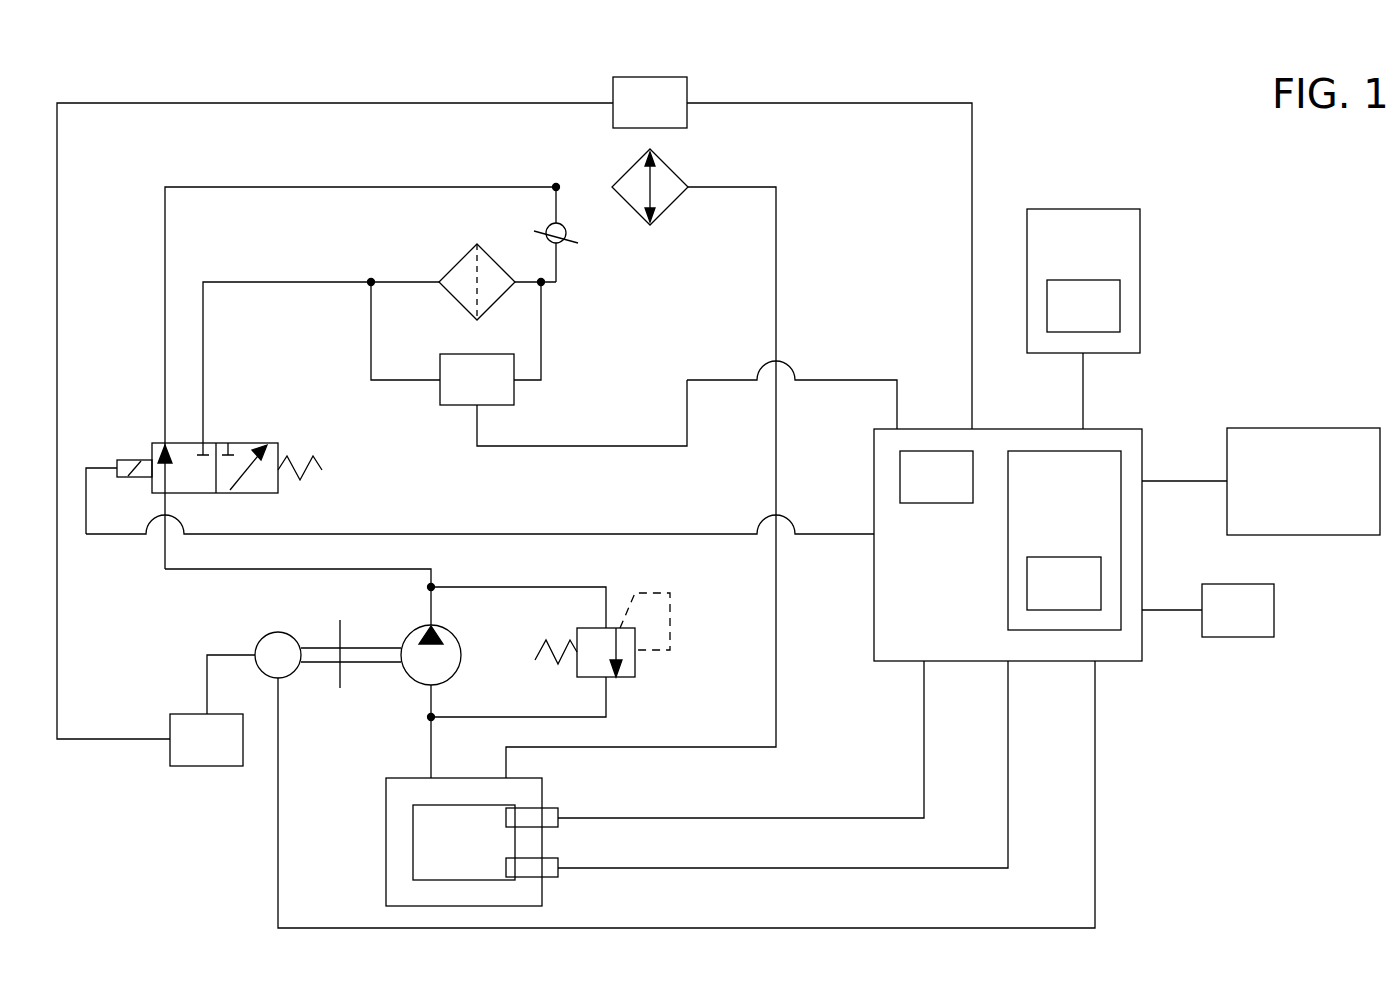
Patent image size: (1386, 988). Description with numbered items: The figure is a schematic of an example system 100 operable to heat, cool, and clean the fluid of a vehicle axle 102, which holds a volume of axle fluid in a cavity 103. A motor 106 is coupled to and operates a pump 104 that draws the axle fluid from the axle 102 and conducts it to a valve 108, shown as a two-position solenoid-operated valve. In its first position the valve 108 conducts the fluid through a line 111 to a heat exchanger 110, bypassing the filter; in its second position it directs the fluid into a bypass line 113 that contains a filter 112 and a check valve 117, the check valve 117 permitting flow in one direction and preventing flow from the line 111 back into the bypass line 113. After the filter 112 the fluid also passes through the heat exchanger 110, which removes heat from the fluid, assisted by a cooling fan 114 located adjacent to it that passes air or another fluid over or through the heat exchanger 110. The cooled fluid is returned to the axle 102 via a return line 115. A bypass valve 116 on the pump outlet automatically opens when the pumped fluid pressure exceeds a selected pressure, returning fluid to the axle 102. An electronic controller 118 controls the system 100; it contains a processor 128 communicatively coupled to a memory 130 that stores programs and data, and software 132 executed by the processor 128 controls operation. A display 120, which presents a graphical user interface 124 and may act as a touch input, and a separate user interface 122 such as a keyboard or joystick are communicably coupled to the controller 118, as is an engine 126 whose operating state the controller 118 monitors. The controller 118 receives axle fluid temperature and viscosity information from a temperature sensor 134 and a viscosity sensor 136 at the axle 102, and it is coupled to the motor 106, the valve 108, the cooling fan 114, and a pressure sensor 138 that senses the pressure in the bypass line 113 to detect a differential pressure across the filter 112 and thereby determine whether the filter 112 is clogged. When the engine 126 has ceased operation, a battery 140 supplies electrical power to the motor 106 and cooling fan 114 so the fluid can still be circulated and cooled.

The system 100 is at (971, 53).
The vehicle axle 102 is at (387, 820).
The cavity 103 is at (443, 855).
The pump 104 is at (458, 632).
The motor 106 is at (262, 638).
The valve 108 is at (152, 448).
The heat exchanger 110 is at (665, 212).
The line 111 is at (165, 237).
The filter 112 is at (456, 264).
The bypass line 113 is at (256, 282).
The cooling fan 114 is at (630, 114).
The return line 115 is at (777, 298).
The bypass valve 116 is at (637, 668).
The check valve 117 is at (578, 240).
The electronic controller 118 is at (922, 587).
The display 120 is at (1063, 253).
The user interface 122 is at (1218, 623).
The graphical user interface 124 is at (1063, 319).
The engine 126 is at (1283, 496).
The processor 128 is at (1044, 499).
The memory 130 is at (916, 490).
The software 132 is at (1044, 597).
The temperature sensor 134 is at (553, 863).
The viscosity sensor 136 is at (553, 812).
The pressure sensor 138 is at (457, 391).
The battery 140 is at (186, 753).